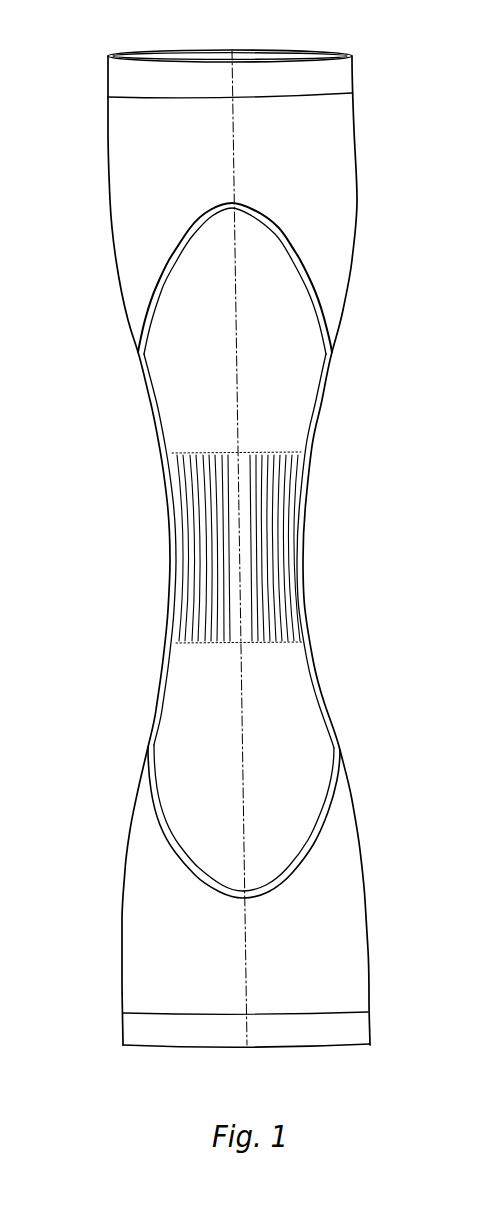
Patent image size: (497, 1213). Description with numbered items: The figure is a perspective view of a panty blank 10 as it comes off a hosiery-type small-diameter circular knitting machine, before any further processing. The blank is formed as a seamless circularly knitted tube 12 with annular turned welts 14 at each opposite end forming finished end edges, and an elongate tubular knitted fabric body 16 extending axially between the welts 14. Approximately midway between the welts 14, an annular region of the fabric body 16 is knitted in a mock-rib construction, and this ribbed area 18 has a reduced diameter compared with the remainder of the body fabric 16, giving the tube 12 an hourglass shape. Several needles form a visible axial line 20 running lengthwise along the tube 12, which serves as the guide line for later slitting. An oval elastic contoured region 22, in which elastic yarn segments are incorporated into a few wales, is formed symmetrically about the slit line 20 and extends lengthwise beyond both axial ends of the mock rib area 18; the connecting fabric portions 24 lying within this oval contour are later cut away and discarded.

The panty blank 10 is at (340, 441).
The seamless circularly knitted tube 12 is at (316, 891).
The annular turned welts 14 is at (317, 77).
The tubular knitted fabric body 16 is at (174, 198).
The mock-rib area 18 is at (272, 528).
The axial line 20 is at (232, 137).
The oval elastic contoured region 22 is at (291, 243).
The connecting fabric portions 24 is at (183, 330).